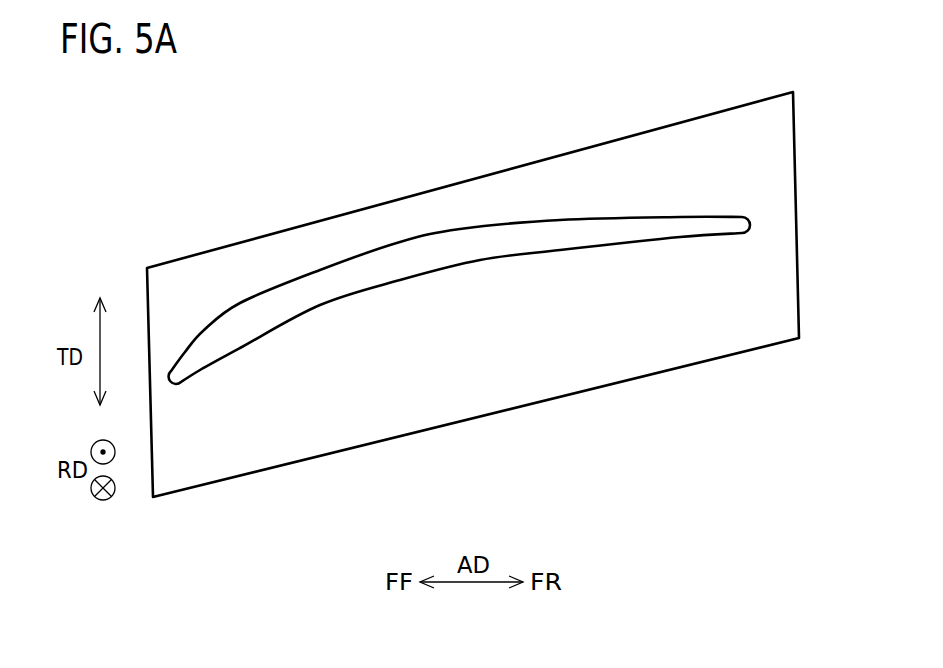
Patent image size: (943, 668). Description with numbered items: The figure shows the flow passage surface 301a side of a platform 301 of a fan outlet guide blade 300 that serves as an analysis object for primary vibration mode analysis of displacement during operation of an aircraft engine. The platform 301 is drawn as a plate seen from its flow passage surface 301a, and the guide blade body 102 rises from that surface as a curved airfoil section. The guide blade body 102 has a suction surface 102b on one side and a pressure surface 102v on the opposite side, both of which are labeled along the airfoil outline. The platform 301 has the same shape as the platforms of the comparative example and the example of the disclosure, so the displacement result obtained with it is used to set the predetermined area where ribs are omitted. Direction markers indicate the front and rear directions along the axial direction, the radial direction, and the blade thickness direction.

The fan outlet guide blade 300 is at (410, 138).
The guide blade body 102 is at (342, 247).
The suction surface 102b is at (492, 223).
The pressure surface 102v is at (492, 260).
The platform 301 is at (315, 460).
The flow passage surface 301a is at (477, 390).